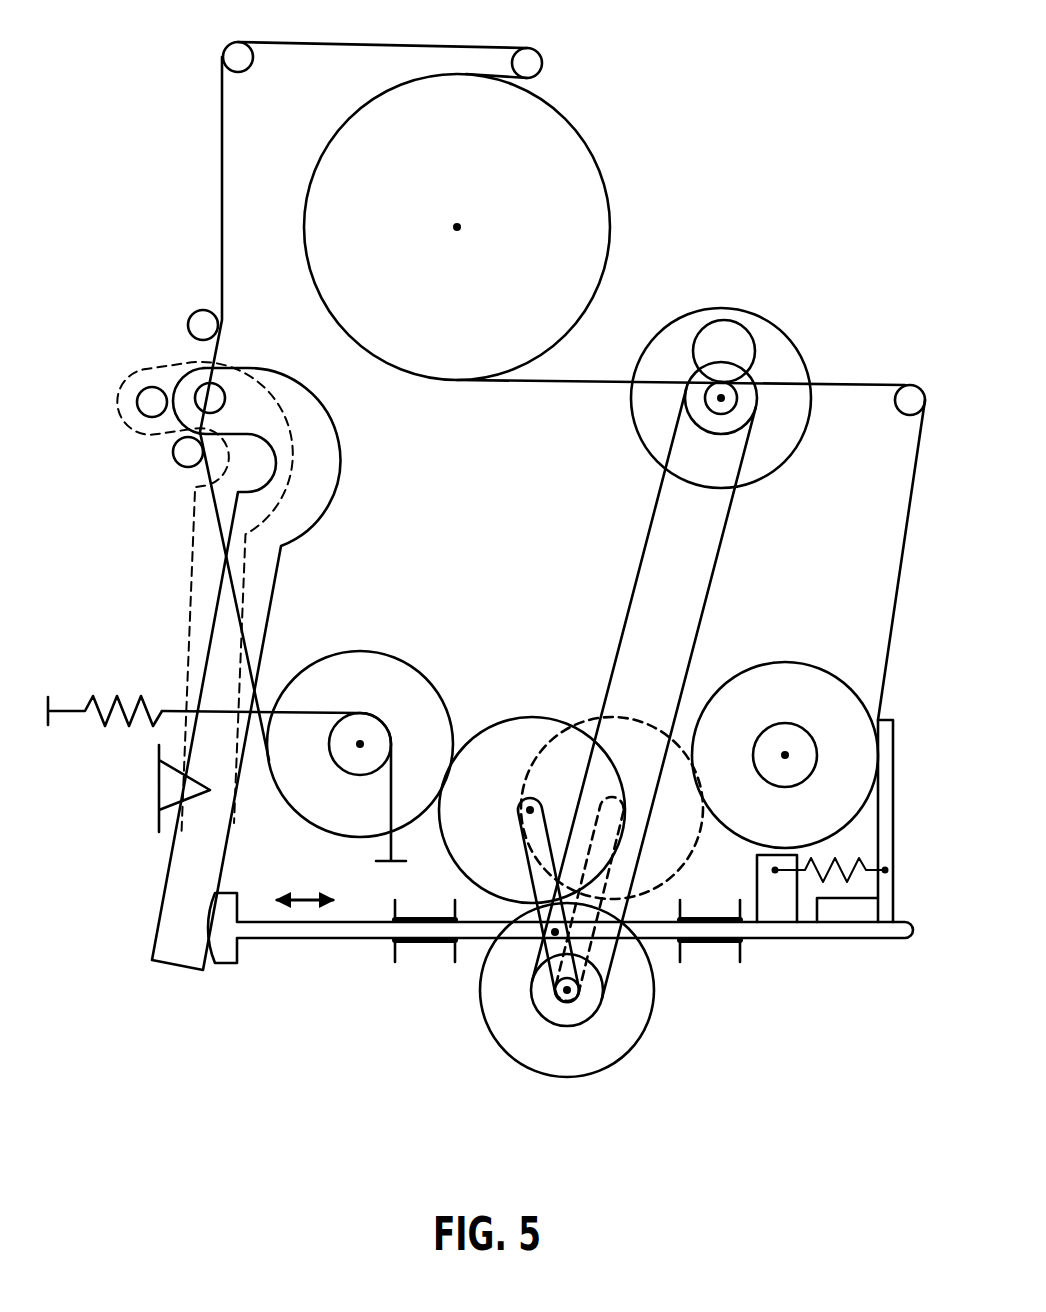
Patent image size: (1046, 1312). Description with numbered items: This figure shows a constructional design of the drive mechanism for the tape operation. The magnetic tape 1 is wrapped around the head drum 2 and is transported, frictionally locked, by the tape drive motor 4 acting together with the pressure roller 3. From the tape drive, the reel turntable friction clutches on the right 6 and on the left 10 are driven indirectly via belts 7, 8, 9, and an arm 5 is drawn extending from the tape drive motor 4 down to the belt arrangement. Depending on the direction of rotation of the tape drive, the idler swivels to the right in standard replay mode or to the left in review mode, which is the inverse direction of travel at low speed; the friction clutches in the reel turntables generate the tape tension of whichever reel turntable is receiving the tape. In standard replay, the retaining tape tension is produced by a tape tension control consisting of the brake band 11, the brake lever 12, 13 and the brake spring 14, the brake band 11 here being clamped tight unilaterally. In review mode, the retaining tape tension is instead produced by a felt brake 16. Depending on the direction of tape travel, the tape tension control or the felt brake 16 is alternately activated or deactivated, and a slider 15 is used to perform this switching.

The magnetic tape 1 is at (394, 43).
The head drum 2 is at (582, 135).
The pressure roller 3 is at (709, 307).
The tape drive motor 4 is at (810, 427).
The connecting arm 5 is at (727, 540).
The right reel turntable friction clutch 6 is at (778, 662).
The belt 7 is at (653, 987).
The belt 8 is at (558, 812).
The belt 9 is at (502, 720).
The left reel turntable friction clutch 10 is at (373, 648).
The brake band 11 is at (300, 703).
The brake lever 12 is at (338, 463).
The brake lever 13 is at (228, 387).
The brake spring 14 is at (92, 697).
The slider 15 is at (301, 940).
The felt brake 16 is at (851, 942).